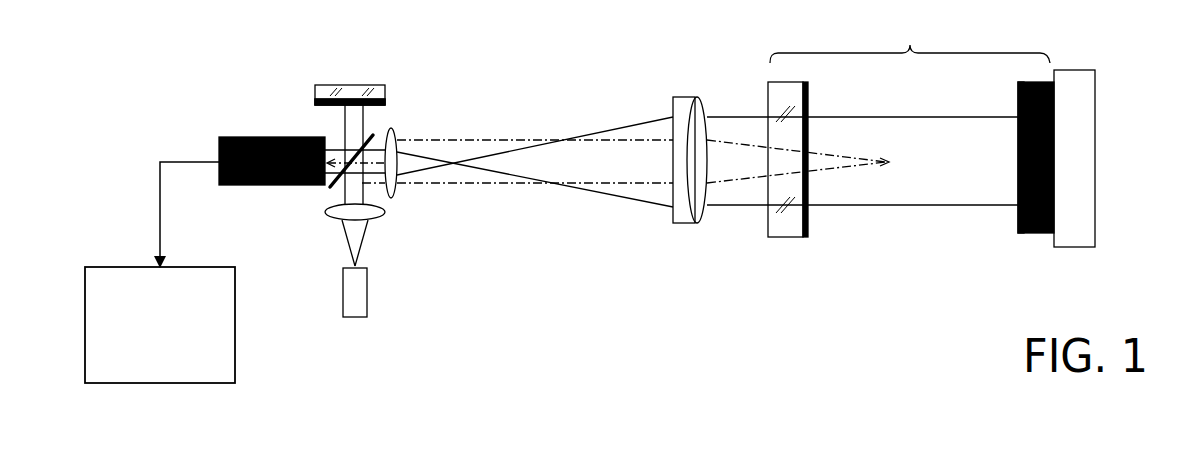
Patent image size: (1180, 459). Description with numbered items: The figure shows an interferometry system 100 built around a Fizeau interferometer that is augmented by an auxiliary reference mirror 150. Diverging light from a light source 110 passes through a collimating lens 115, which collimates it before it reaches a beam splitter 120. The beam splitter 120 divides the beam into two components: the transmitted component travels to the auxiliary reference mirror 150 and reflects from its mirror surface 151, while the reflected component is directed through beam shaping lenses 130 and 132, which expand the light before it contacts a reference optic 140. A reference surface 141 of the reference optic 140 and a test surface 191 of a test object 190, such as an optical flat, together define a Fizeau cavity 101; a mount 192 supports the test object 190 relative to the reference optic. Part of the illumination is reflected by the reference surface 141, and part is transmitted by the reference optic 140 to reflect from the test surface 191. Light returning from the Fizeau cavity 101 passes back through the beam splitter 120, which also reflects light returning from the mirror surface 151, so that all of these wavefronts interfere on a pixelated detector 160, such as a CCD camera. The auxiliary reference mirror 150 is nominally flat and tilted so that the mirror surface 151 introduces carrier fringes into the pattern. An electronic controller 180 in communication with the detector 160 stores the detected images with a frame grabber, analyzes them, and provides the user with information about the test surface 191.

The interferometry system 100 is at (185, 90).
The Fizeau cavity 101 is at (910, 38).
The light source 110 is at (367, 278).
The collimating lens 115 is at (378, 217).
The beam splitter 120 is at (337, 188).
The beam shaping lens 130 is at (395, 130).
The beam shaping lens 132 is at (695, 224).
The reference optic 140 is at (768, 227).
The reference surface 141 is at (808, 222).
The auxiliary reference mirror 150 is at (313, 92).
The mirror surface 151 is at (383, 107).
The pixelated detector 160 is at (265, 186).
The electronic controller 180 is at (187, 332).
The test object 190 is at (1032, 234).
The test surface 191 is at (1018, 220).
The mount 192 is at (1080, 248).